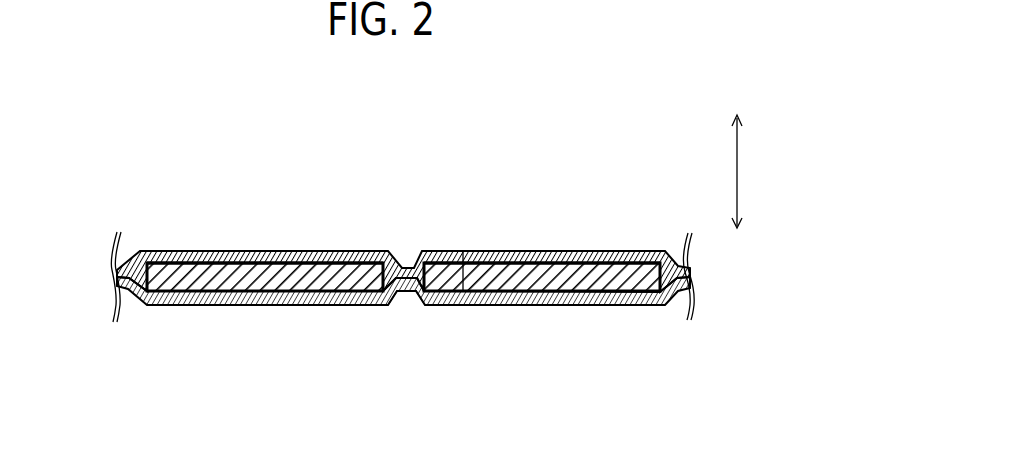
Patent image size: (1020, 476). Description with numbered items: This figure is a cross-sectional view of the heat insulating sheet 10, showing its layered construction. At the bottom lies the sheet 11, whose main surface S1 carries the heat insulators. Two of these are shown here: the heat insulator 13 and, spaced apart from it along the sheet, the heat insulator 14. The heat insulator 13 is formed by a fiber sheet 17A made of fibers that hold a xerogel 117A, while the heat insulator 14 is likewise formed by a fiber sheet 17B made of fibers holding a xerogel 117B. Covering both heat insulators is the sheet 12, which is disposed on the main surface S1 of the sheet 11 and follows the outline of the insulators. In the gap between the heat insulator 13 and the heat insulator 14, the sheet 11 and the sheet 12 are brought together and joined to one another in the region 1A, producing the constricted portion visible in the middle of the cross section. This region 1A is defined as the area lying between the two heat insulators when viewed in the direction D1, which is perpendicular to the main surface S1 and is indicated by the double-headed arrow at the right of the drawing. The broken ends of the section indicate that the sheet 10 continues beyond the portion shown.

The heat insulating sheet 10 is at (646, 152).
The sheet 11 is at (232, 298).
The sheet 12 is at (194, 251).
The heat insulator 13 is at (267, 263).
The heat insulator 14 is at (507, 263).
The fiber sheet 17A is at (228, 273).
The fiber sheet 17B is at (615, 273).
The xerogel 117A is at (336, 272).
The xerogel 117B is at (548, 272).
The region 1A is at (403, 294).
The main surface S1 is at (463, 252).
The direction D1 is at (737, 189).